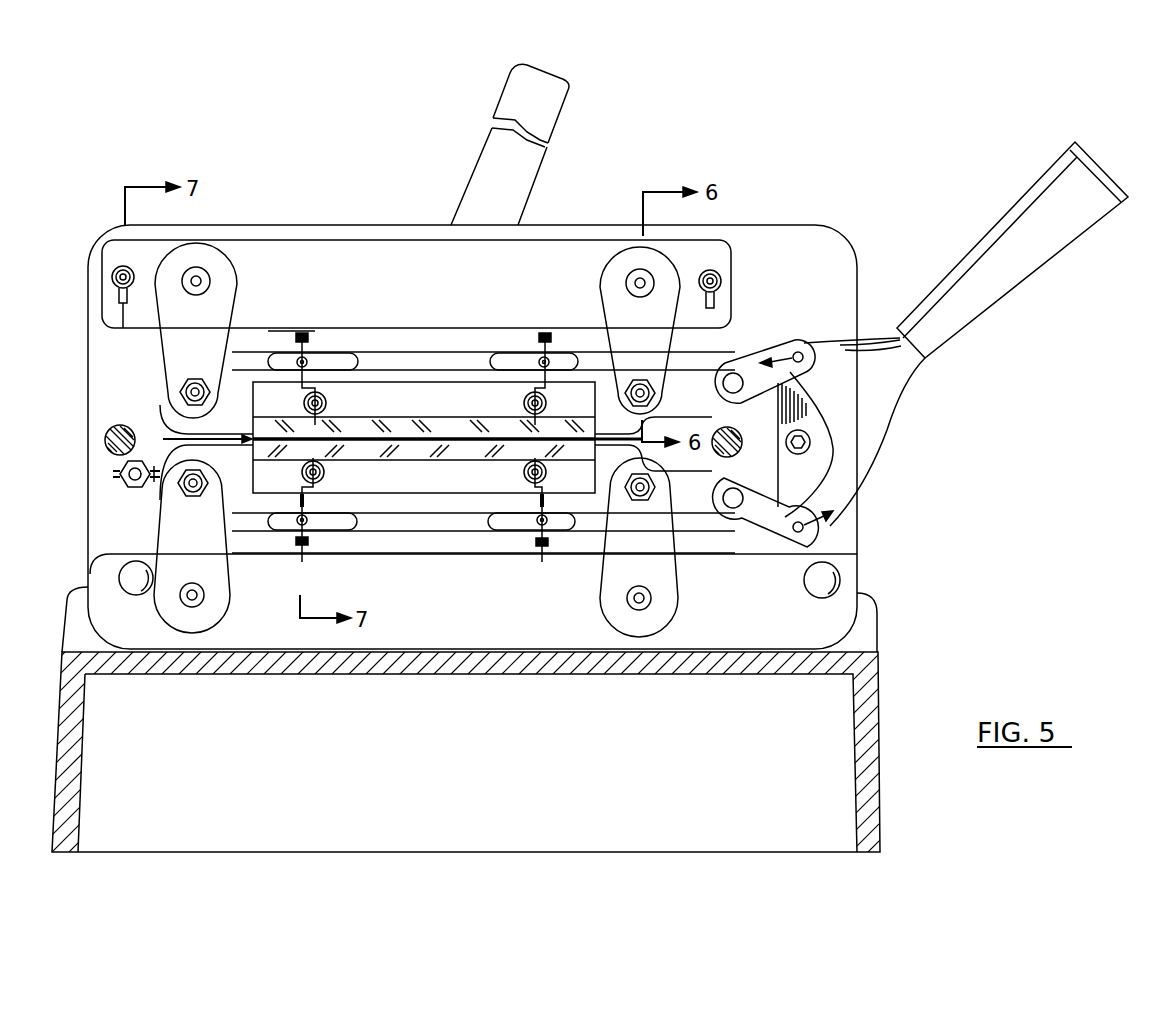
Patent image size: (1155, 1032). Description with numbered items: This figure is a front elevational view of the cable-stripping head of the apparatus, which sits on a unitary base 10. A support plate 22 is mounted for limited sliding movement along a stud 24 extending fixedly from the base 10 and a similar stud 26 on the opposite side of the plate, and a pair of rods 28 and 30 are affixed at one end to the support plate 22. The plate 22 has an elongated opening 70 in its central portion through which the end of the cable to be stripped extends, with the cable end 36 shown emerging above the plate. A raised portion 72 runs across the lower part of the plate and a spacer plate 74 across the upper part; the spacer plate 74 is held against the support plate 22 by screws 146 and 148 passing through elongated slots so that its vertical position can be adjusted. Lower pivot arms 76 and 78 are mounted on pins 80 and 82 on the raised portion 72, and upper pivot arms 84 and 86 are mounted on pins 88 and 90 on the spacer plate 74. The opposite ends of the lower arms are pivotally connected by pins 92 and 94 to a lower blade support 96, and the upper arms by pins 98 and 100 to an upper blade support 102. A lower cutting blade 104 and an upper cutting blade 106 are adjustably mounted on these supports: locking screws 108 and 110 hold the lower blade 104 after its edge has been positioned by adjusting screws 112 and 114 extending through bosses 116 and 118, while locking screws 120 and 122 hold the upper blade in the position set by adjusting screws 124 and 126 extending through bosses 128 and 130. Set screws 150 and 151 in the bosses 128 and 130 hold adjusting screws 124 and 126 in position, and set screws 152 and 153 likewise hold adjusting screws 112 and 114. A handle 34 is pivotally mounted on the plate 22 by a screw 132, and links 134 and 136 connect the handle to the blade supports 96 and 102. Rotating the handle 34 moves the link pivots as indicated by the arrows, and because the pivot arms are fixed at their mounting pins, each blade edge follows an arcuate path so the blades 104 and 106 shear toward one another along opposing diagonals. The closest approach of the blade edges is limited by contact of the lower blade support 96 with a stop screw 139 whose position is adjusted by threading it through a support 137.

The unitary base 10 is at (552, 723).
The support plate 22 is at (472, 411).
The stud 24 is at (94, 574).
The stud 26 is at (860, 573).
The rod 28 is at (79, 444).
The rod 30 is at (742, 450).
The handle 34 is at (984, 250).
The strip 36 is at (543, 144).
The elongated opening 70 is at (407, 443).
The raised portion 72 is at (473, 635).
The spacer plate 74 is at (416, 255).
The lower pivot arm 76 is at (220, 546).
The lower pivot arm 78 is at (612, 547).
The pin 80 is at (225, 610).
The pin 82 is at (672, 613).
The upper pivot arm 84 is at (219, 330).
The upper pivot arm 86 is at (616, 330).
The pin 88 is at (233, 272).
The pin 90 is at (597, 274).
The pin 92 is at (187, 508).
The pin 94 is at (637, 512).
The lower blade support 96 is at (583, 542).
The pin 98 is at (191, 369).
The pin 100 is at (640, 372).
The upper blade support 102 is at (483, 334).
The lower cutting blade 104 is at (483, 511).
The upper cutting blade 106 is at (424, 382).
The locking screw 108 is at (348, 474).
The locking screw 110 is at (507, 474).
The adjusting screw 112 is at (332, 521).
The adjusting screw 114 is at (523, 522).
The boss 116 is at (330, 533).
The boss 118 is at (516, 533).
The locking screw 120 is at (347, 404).
The locking screw 122 is at (505, 404).
The adjusting screw 124 is at (339, 348).
The adjusting screw 126 is at (509, 348).
The boss 128 is at (342, 334).
The boss 130 is at (506, 334).
The screw 132 is at (851, 432).
The link 134 is at (773, 534).
The link 136 is at (769, 348).
The support 137 is at (89, 483).
The stop screw 139 is at (126, 499).
The screw 146 is at (78, 274).
The screw 148 is at (749, 279).
The set screw 150 is at (281, 383).
The set screw 151 is at (571, 348).
The set screw 152 is at (269, 534).
The set screw 153 is at (572, 508).